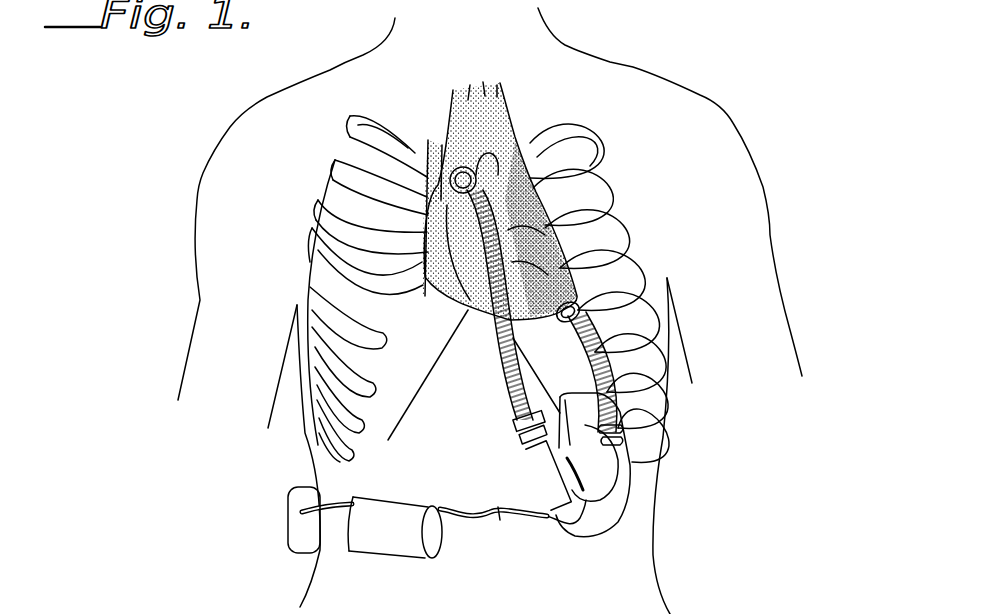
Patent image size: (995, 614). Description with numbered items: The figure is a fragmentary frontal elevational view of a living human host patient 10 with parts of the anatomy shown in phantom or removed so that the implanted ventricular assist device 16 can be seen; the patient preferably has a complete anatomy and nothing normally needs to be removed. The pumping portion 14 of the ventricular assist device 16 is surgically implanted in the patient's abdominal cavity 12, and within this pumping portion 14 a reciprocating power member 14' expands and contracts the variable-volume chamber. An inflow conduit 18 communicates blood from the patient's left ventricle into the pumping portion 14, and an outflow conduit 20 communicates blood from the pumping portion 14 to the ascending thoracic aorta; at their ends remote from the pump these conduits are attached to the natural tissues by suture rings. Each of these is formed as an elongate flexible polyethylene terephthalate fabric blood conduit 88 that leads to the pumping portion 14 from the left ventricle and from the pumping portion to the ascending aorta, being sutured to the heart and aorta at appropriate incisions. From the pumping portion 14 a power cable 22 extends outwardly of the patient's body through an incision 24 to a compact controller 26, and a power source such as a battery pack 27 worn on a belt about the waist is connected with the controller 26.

The living human host patient 10 is at (745, 97).
The abdominal cavity 12 is at (464, 428).
The pumping portion 14 is at (630, 466).
The power member 14' is at (555, 396).
The ventricular assist device 16 is at (641, 456).
The inflow conduit 18 is at (620, 431).
The outflow conduit 20 is at (516, 441).
The power cable 22 is at (552, 525).
The incision 24 is at (502, 528).
The compact controller 26 is at (388, 548).
The battery pack 27 is at (297, 525).
The fabric blood conduit 88 is at (502, 368).